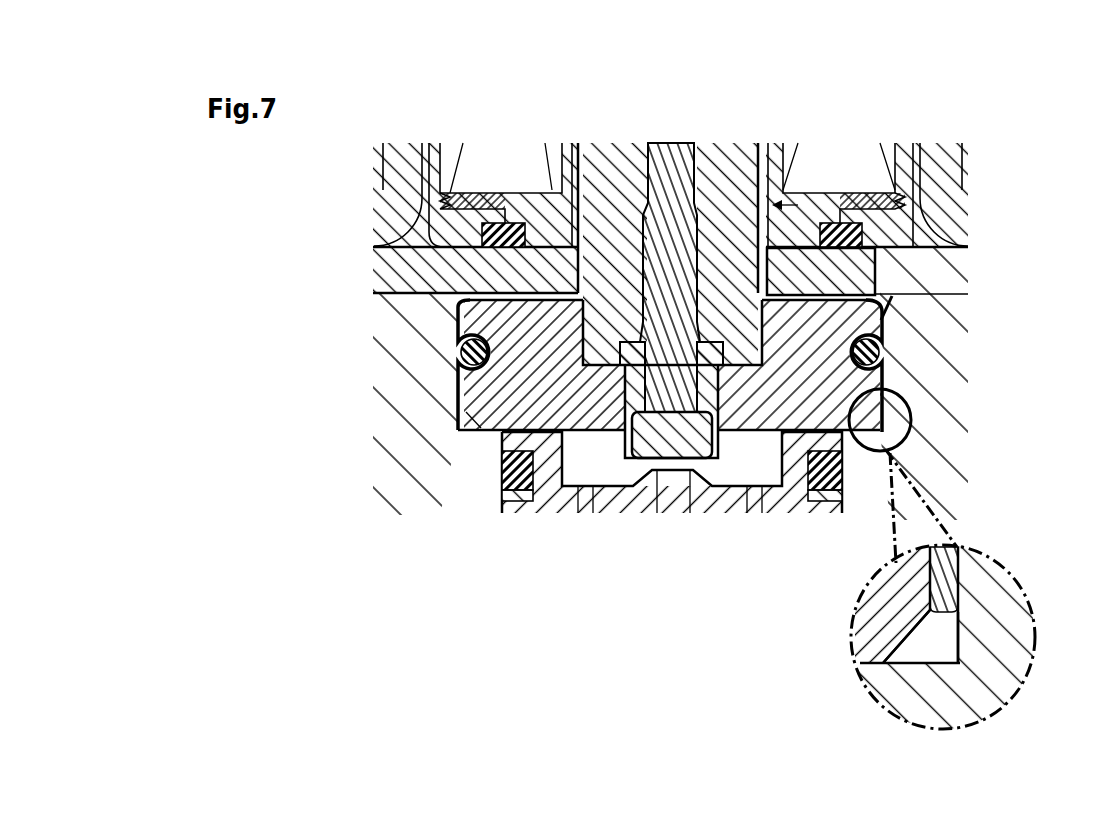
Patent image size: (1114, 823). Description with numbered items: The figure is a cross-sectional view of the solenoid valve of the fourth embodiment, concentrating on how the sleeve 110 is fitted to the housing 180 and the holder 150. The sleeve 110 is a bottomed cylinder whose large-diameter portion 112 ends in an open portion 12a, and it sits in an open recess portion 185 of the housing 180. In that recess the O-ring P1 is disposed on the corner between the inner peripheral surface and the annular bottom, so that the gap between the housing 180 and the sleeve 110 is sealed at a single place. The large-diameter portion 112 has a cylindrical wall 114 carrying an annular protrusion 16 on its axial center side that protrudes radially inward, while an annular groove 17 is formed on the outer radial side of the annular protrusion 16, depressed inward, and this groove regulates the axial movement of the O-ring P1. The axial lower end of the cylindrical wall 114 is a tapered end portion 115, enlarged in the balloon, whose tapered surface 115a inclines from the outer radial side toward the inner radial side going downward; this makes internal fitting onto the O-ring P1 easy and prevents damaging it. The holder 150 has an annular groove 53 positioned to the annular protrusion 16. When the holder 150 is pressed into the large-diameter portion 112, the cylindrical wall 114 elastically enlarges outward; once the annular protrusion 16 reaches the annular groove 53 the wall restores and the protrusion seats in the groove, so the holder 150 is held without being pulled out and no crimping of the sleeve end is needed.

The sleeve 110 is at (812, 194).
The large-diameter portion 112 is at (866, 286).
The annular protrusion 16 is at (891, 298).
The cylindrical wall 114 is at (890, 320).
The annular groove 17 is at (882, 358).
The holder 150 is at (886, 384).
The open portion 12a is at (905, 430).
The housing 180 is at (386, 312).
The annular groove 53 is at (464, 352).
The O-ring P1 is at (478, 392).
The open recess portion 185 is at (466, 412).
The tapered end portion 115 is at (938, 622).
The tapered surface 115a is at (960, 618).